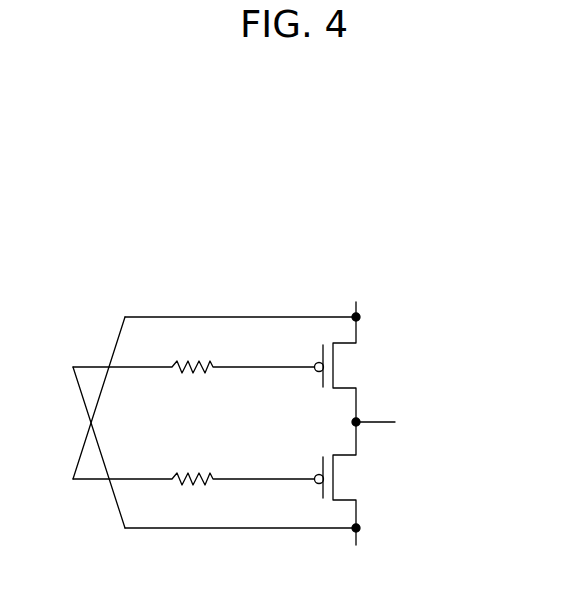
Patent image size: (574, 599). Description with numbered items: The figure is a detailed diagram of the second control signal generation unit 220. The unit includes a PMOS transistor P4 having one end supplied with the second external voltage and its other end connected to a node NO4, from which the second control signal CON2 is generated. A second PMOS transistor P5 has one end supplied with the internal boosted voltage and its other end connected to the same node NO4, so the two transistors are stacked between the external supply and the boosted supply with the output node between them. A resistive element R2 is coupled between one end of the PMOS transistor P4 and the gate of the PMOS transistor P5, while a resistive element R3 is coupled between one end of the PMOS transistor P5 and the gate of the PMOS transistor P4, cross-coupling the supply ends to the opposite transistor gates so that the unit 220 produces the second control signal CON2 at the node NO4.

The second control signal generation unit 220 is at (458, 248).
The resistive element R3 is at (197, 353).
The resistive element R2 is at (197, 465).
The PMOS transistor P4 is at (357, 368).
The PMOS transistor P5 is at (357, 480).
The node NO4 is at (350, 422).
The second control signal CON2 is at (404, 421).